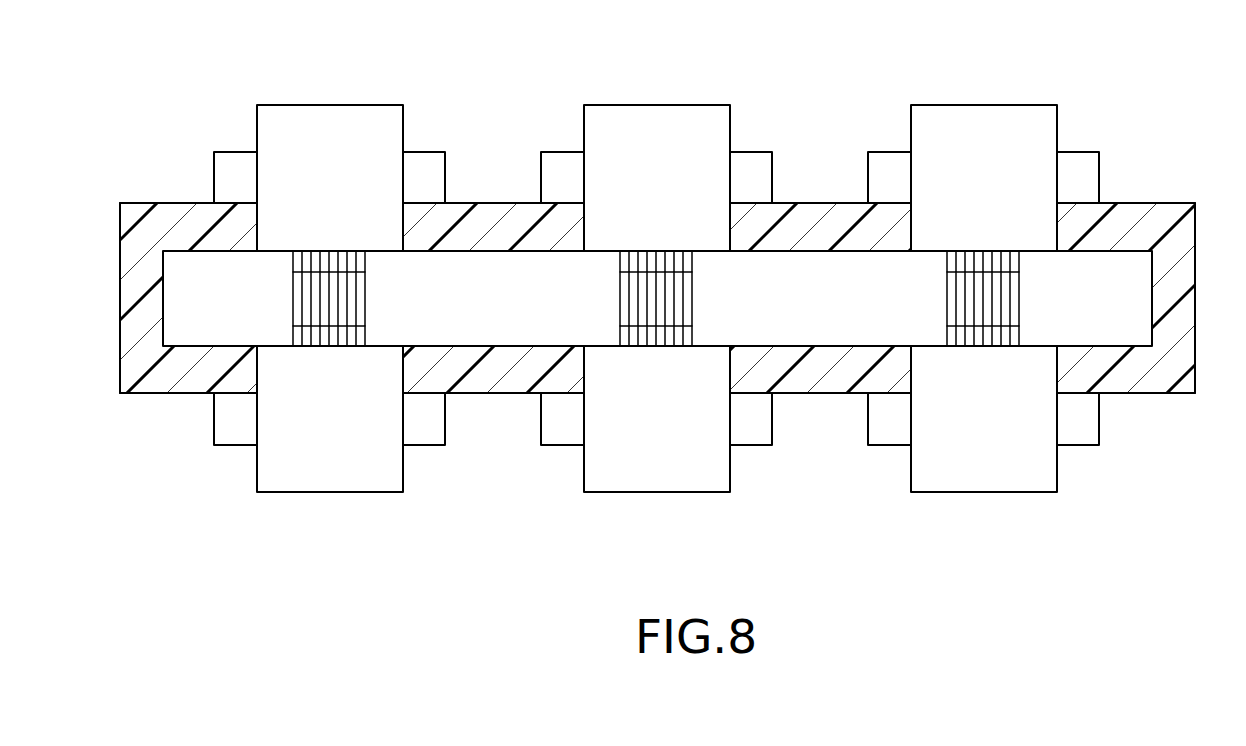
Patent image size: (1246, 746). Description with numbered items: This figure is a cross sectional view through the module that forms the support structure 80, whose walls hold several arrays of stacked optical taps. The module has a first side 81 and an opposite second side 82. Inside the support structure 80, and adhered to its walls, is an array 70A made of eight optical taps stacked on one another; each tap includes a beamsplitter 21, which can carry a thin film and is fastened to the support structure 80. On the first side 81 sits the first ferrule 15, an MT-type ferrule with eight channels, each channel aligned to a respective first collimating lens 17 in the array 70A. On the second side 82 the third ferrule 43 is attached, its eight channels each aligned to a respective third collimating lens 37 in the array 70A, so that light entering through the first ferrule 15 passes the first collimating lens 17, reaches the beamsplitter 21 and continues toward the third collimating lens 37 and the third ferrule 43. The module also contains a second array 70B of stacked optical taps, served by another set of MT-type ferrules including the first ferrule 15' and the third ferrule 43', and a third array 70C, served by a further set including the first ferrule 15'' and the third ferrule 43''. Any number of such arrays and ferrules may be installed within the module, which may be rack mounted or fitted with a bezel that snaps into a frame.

The support structure 80 is at (1148, 72).
The first side 81 is at (1160, 218).
The second side 82 is at (1158, 375).
The first ferrule 15 is at (329, 145).
The first ferrule of second array 15' is at (656, 145).
The first ferrule of third array 15'' is at (983, 145).
The third ferrule 43 is at (329, 450).
The third ferrule of second array 43' is at (656, 450).
The third ferrule of third array 43'' is at (983, 450).
The first collimating lens 17 is at (293, 262).
The beamsplitter 21 is at (293, 296).
The third collimating lens 37 is at (293, 331).
The array 70A is at (422, 284).
The second array 70B is at (726, 287).
The third array 70C is at (1054, 287).